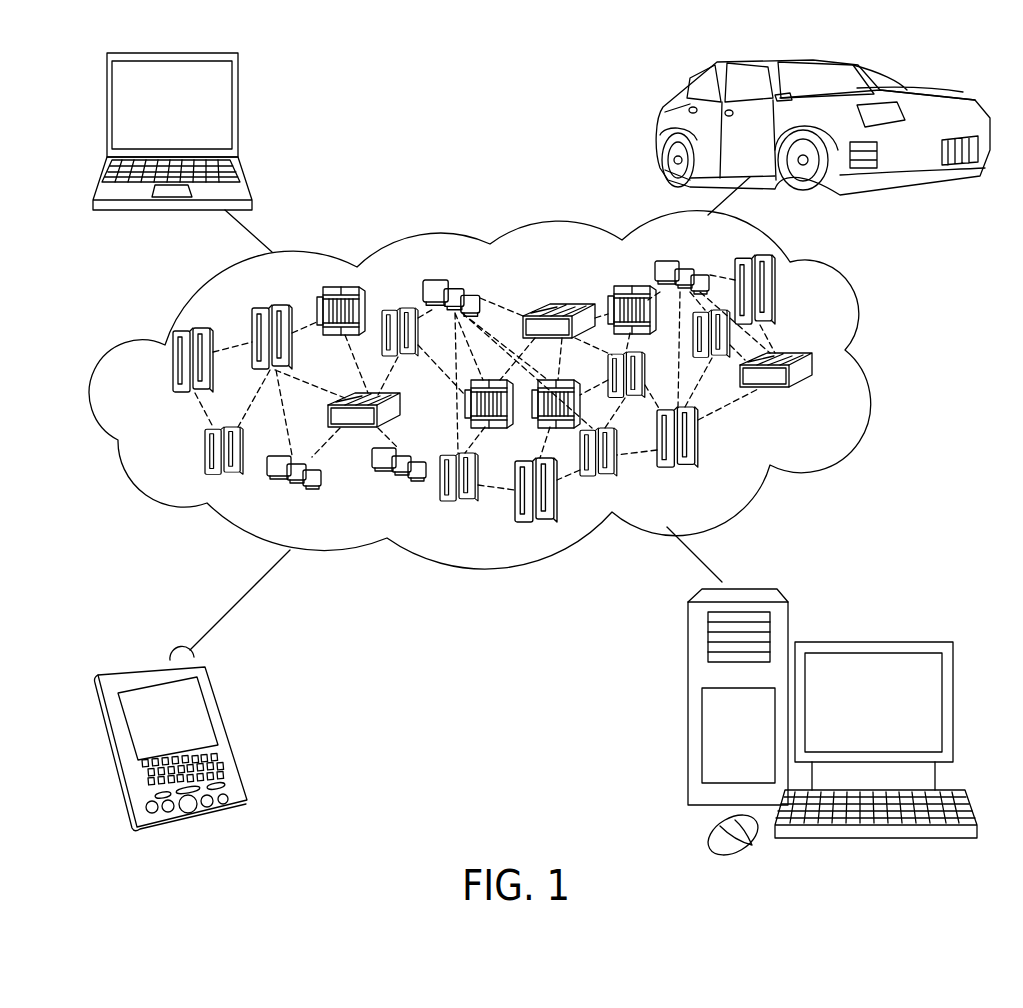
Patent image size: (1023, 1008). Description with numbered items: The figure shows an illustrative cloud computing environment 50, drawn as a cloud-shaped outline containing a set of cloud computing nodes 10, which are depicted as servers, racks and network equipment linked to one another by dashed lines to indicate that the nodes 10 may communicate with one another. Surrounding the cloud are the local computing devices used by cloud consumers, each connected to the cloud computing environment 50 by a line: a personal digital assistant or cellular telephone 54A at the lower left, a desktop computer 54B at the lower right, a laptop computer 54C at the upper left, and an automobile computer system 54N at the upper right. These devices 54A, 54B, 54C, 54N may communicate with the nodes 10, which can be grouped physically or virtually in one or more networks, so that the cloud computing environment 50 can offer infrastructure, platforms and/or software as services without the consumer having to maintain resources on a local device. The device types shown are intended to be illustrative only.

The cloud computing node 10 is at (817, 398).
The cloud computing environment 50 is at (509, 390).
The personal digital assistant or cellular telephone 54A is at (228, 733).
The desktop computer 54B is at (870, 642).
The laptop computer 54C is at (238, 110).
The automobile computer system 54N is at (662, 128).